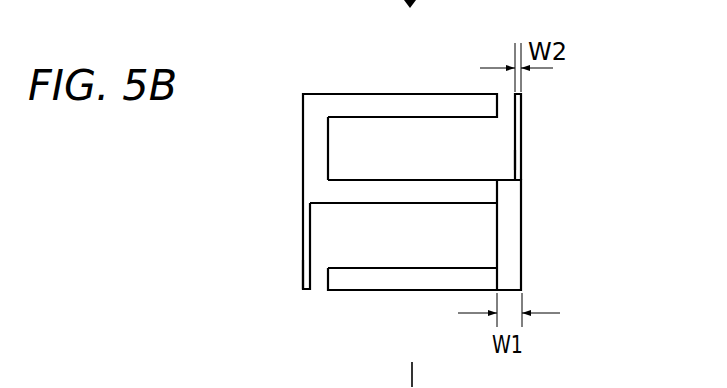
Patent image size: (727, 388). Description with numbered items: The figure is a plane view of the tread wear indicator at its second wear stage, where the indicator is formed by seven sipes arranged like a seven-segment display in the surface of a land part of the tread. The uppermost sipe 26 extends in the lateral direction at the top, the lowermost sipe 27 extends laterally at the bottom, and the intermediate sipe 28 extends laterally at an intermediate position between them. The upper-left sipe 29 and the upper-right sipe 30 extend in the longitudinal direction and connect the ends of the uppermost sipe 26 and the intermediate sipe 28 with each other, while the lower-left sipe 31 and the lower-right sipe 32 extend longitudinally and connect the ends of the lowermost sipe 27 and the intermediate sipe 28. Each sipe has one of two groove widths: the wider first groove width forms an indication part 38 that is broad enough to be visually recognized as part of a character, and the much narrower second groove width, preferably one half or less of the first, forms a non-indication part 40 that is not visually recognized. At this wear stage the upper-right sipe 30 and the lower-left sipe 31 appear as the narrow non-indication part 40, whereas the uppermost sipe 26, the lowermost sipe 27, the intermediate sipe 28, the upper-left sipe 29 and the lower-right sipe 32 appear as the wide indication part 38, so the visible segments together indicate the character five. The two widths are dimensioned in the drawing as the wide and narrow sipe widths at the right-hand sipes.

The uppermost sipe 26 is at (408, 100).
The lowermost sipe 27 is at (400, 291).
The intermediate sipe 28 is at (400, 203).
The upper-left sipe 29 is at (303, 139).
The upper-right sipe 30 is at (522, 138).
The lower-left sipe 31 is at (303, 240).
The lower-right sipe 32 is at (522, 248).
The indication part 38 is at (502, 278).
The non-indication part 40 is at (303, 270).